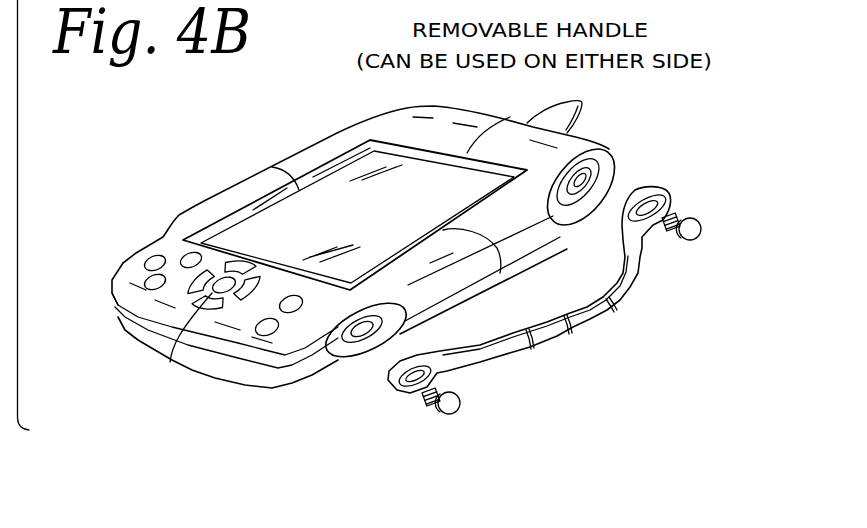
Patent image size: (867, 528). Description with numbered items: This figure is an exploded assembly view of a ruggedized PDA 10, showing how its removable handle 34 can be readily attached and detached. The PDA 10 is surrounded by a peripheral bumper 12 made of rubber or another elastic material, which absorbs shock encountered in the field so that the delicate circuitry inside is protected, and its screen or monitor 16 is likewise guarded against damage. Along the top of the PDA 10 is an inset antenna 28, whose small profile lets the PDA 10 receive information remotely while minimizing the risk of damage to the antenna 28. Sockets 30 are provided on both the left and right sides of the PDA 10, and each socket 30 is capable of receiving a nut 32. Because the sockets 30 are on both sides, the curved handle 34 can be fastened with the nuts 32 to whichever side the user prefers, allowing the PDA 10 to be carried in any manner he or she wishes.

The ruggedized PDA 10 is at (346, 106).
The peripheral bumper 12 is at (533, 242).
The screen or monitor 16 is at (331, 198).
The inset antenna 28 is at (581, 94).
The sockets 30 is at (615, 172).
The nuts 32 is at (461, 403).
The handle 34 is at (553, 341).